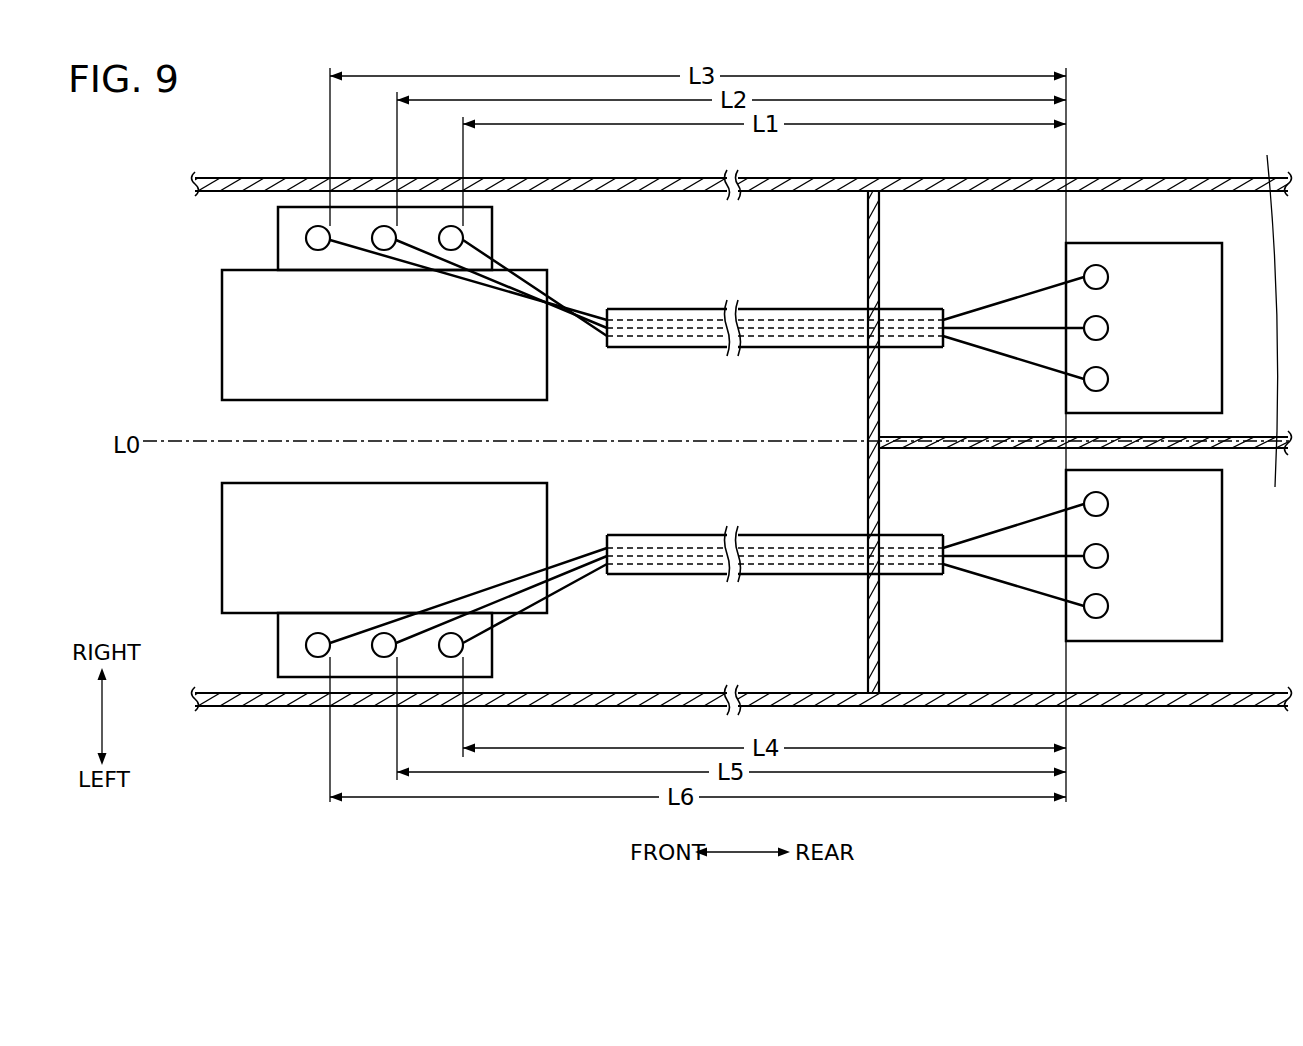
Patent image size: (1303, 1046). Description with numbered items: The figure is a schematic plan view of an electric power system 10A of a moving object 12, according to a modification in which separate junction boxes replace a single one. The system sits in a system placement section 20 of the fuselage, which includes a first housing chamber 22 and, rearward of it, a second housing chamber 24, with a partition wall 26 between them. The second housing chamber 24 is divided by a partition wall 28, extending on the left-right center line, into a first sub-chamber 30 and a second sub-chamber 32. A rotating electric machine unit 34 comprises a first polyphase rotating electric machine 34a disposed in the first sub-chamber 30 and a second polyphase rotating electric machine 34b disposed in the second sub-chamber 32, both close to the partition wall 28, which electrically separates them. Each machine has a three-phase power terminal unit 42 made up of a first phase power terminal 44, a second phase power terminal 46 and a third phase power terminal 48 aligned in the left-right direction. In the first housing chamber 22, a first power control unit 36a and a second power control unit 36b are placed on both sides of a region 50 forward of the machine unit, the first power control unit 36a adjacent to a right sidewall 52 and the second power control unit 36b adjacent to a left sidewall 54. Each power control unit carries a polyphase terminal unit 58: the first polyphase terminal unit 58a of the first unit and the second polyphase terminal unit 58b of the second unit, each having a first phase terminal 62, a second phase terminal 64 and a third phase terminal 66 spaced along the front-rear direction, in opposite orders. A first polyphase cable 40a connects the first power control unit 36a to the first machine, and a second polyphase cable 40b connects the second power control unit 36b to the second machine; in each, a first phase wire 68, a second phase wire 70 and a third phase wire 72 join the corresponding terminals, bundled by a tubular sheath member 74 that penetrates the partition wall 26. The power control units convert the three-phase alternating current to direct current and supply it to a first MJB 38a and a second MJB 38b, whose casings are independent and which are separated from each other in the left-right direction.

The electric power system 10A is at (170, 322).
The moving object 12 is at (112, 151).
The system placement section 20 is at (218, 170).
The first housing chamber 22 is at (682, 202).
The second housing chamber 24 is at (1280, 130).
The partition wall 26 is at (868, 488).
The partition wall 28 is at (950, 435).
The first sub-chamber 30 is at (1216, 212).
The second sub-chamber 32 is at (1266, 308).
The rotating electric machine unit 34 is at (1219, 664).
The first polyphase rotating electric machine 34a is at (1190, 263).
The second polyphase rotating electric machine 34b is at (1178, 628).
The first power control unit 36a is at (278, 237).
The second power control unit 36b is at (278, 642).
The first MJB 38a is at (233, 297).
The second MJB 38b is at (233, 510).
The first polyphase cable 40a is at (794, 297).
The second polyphase cable 40b is at (794, 586).
The power terminal unit 42 is at (1097, 250).
The first phase power terminal 44 is at (1110, 277).
The second phase power terminal 46 is at (1110, 328).
The third phase power terminal 48 is at (1110, 379).
The region 50 is at (205, 356).
The right sidewall 52 is at (580, 176).
The left sidewall 54 is at (577, 705).
The polyphase terminal unit 58 is at (287, 444).
The first polyphase terminal unit 58a is at (317, 214).
The second polyphase terminal unit 58b is at (317, 670).
The first phase terminal 62 is at (449, 251).
The second phase terminal 64 is at (383, 251).
The third phase terminal 66 is at (317, 251).
The first phase wire 68 is at (585, 306).
The second phase wire 70 is at (560, 307).
The third phase wire 72 is at (514, 305).
The sheath member 74 is at (688, 311).